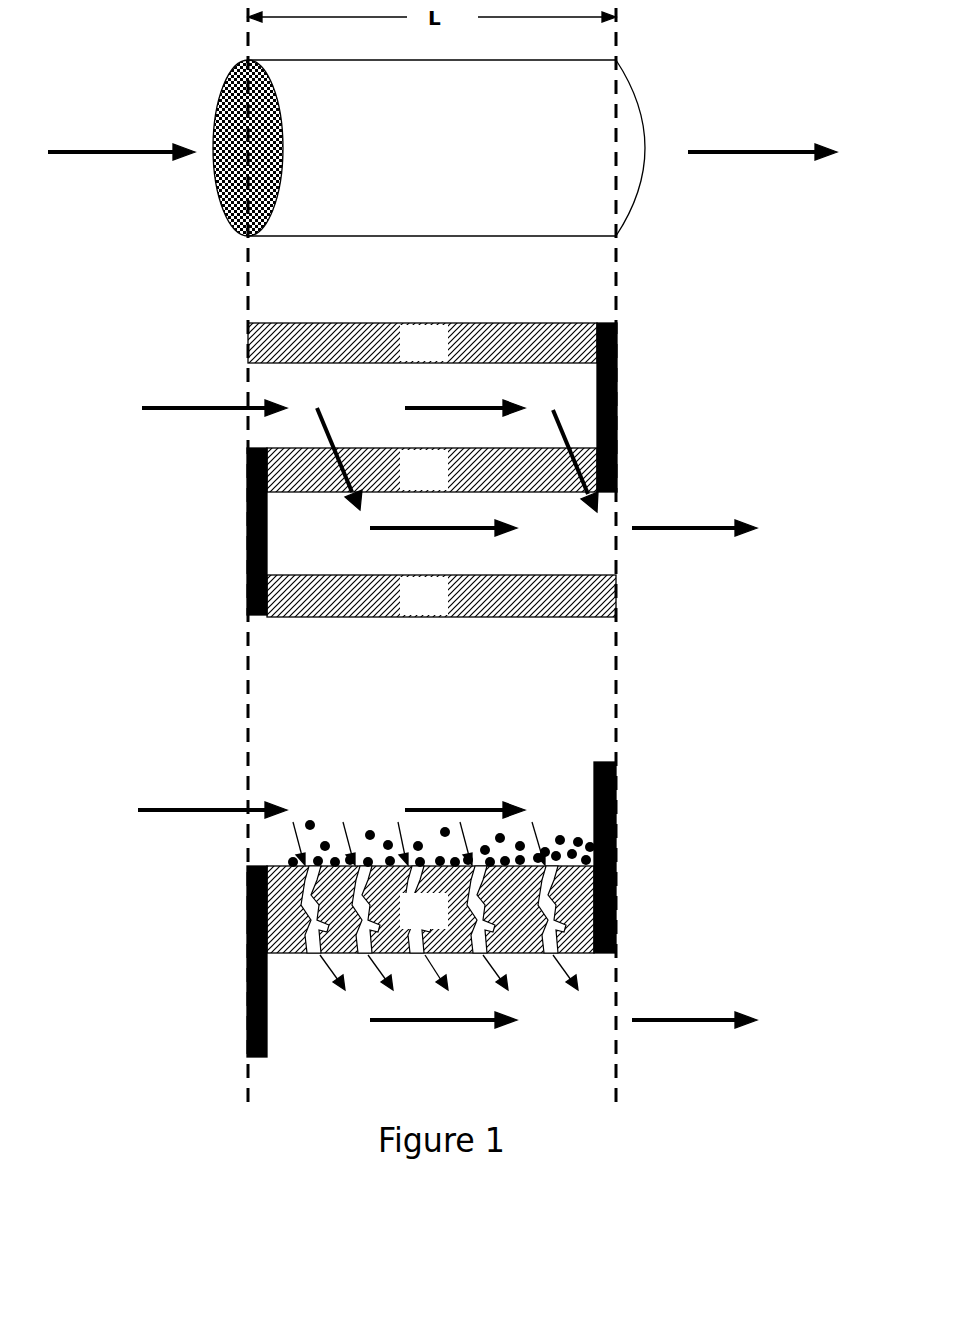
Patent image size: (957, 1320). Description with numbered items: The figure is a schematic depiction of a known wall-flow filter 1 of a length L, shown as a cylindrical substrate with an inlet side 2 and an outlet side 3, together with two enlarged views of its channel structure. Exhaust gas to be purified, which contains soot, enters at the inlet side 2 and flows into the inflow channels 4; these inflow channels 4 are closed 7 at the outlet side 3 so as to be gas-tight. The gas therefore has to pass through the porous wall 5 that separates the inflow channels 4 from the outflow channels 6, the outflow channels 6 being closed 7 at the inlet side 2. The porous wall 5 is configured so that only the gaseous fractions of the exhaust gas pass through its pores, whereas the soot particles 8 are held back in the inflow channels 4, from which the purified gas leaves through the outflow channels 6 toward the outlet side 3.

The wall-flow filter 1 is at (429, 148).
The inlet side 2 is at (216, 163).
The outlet side 3 is at (645, 149).
The inflow channels 4 is at (445, 630).
The porous wall 5 is at (432, 638).
The outflow channels 6 is at (449, 779).
The closure 7 is at (618, 405).
The soot particles 8 is at (527, 845).